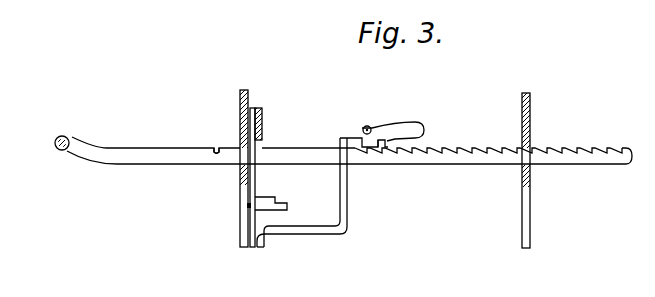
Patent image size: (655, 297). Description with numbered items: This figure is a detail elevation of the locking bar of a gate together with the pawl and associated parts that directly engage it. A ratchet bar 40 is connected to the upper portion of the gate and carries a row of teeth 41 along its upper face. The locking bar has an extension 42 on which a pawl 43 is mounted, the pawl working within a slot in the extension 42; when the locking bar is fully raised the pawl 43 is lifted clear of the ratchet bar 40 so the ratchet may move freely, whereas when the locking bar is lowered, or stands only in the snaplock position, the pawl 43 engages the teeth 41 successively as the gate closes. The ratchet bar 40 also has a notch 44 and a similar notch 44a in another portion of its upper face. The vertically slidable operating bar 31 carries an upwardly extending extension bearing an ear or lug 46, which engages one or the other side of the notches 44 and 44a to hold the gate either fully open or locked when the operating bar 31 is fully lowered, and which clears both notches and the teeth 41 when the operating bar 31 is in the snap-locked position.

The operating bar 31 is at (250, 229).
The ratchet bar 40 is at (455, 160).
The teeth 41 is at (510, 148).
The extension 42 is at (348, 220).
The pawl 43 is at (407, 124).
The notch 44 is at (488, 149).
The notch 44a is at (217, 147).
The ear or lug 46 is at (262, 118).